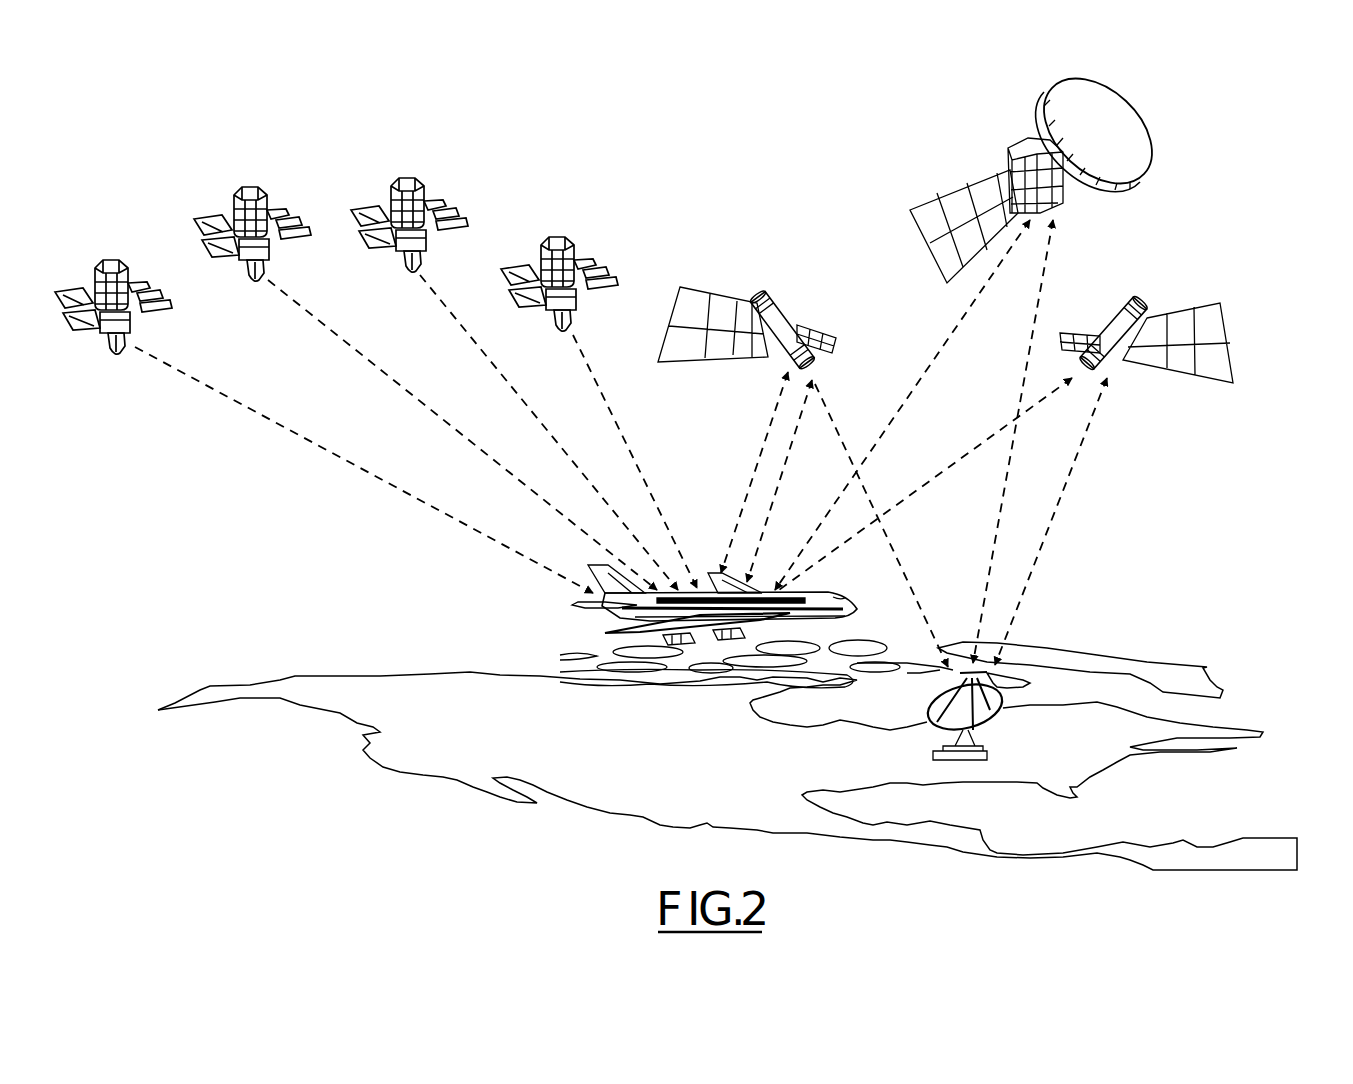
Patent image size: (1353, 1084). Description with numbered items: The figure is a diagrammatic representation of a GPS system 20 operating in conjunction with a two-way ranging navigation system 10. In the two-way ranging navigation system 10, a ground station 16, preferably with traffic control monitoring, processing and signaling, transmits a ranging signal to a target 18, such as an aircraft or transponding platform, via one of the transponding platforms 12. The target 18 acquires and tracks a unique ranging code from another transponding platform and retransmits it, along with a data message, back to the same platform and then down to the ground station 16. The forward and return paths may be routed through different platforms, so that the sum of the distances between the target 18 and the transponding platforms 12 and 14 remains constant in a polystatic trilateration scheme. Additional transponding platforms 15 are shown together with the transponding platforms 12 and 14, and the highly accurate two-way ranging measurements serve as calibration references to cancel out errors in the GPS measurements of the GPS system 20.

The two-way ranging navigation system 10 is at (1272, 136).
The transponding platform 12 is at (790, 316).
The transponding platform 14 is at (1140, 128).
The additional transponding platforms 15 is at (537, 270).
The ground station 16 is at (997, 721).
The target 18 is at (813, 594).
The GPS system 20 is at (157, 165).